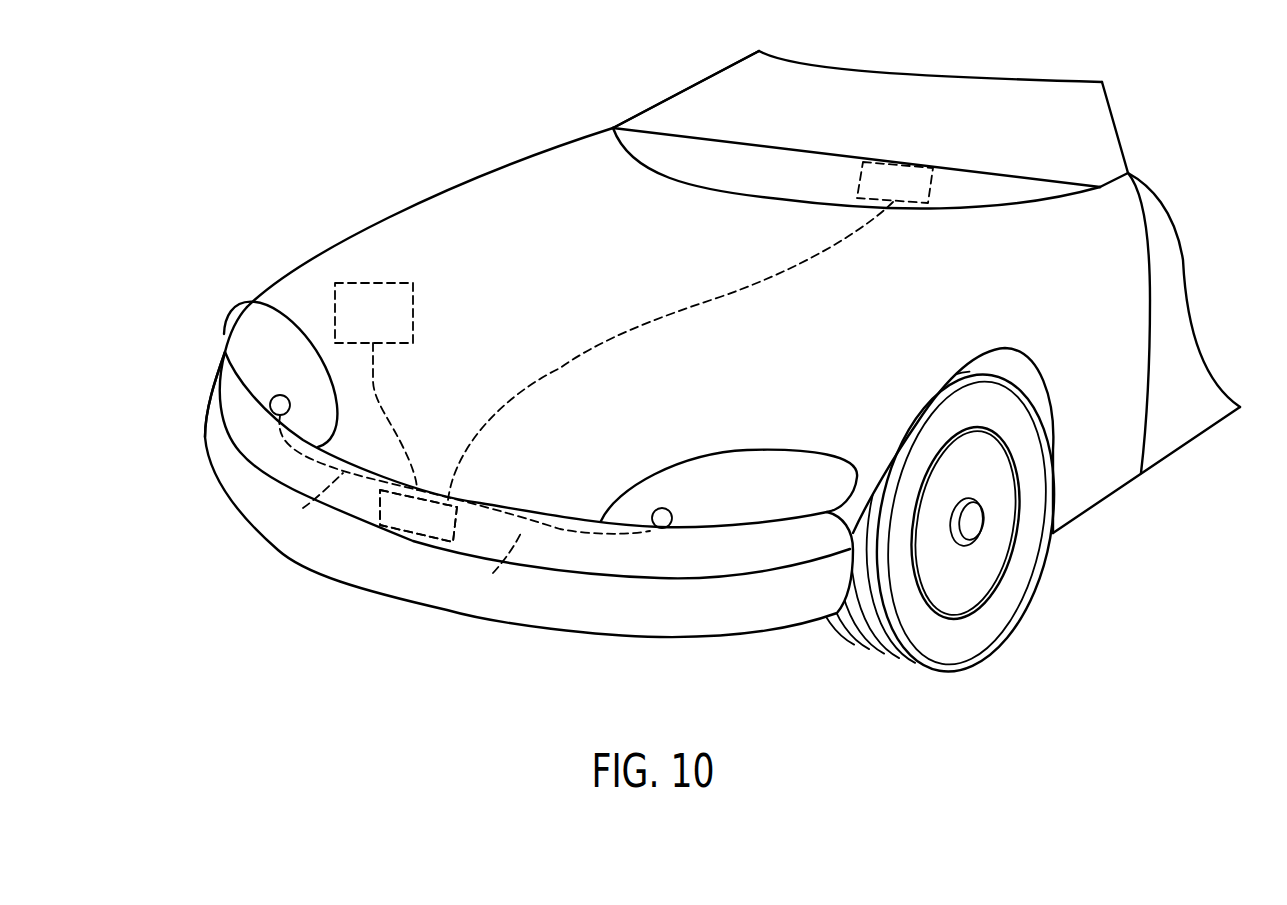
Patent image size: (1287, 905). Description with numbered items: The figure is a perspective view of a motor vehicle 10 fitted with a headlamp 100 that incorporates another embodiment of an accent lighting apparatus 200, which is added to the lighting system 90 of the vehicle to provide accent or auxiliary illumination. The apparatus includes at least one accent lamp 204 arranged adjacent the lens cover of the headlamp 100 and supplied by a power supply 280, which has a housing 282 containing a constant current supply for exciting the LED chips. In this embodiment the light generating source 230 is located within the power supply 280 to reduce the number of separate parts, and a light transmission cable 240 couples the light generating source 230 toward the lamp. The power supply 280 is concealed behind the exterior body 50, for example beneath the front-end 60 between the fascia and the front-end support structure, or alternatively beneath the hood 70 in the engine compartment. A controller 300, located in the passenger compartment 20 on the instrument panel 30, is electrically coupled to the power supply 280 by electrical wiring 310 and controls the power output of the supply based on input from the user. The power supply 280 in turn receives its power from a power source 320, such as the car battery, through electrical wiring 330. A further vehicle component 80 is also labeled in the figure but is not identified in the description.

The motor vehicle 10 is at (405, 158).
The passenger compartment 20 is at (842, 131).
The instrument panel 30 is at (744, 181).
The exterior body 50 is at (1155, 190).
The front-end 60 is at (558, 617).
The hood 70 is at (593, 175).
The front wheel and fender 80 is at (1003, 366).
The lighting system 90 is at (735, 352).
The headlamp 100 is at (220, 310).
The accent lighting apparatus 200 is at (295, 662).
The accent lamp 204 is at (255, 423).
The light generating source 230 is at (418, 516).
The light transmission cable 240 is at (396, 532).
The power supply 280 is at (406, 526).
The housing 282 is at (468, 510).
The controller 300 is at (903, 162).
The electrical wiring 310 is at (720, 297).
The power source 320 is at (360, 329).
The electrical wiring 330 is at (398, 410).